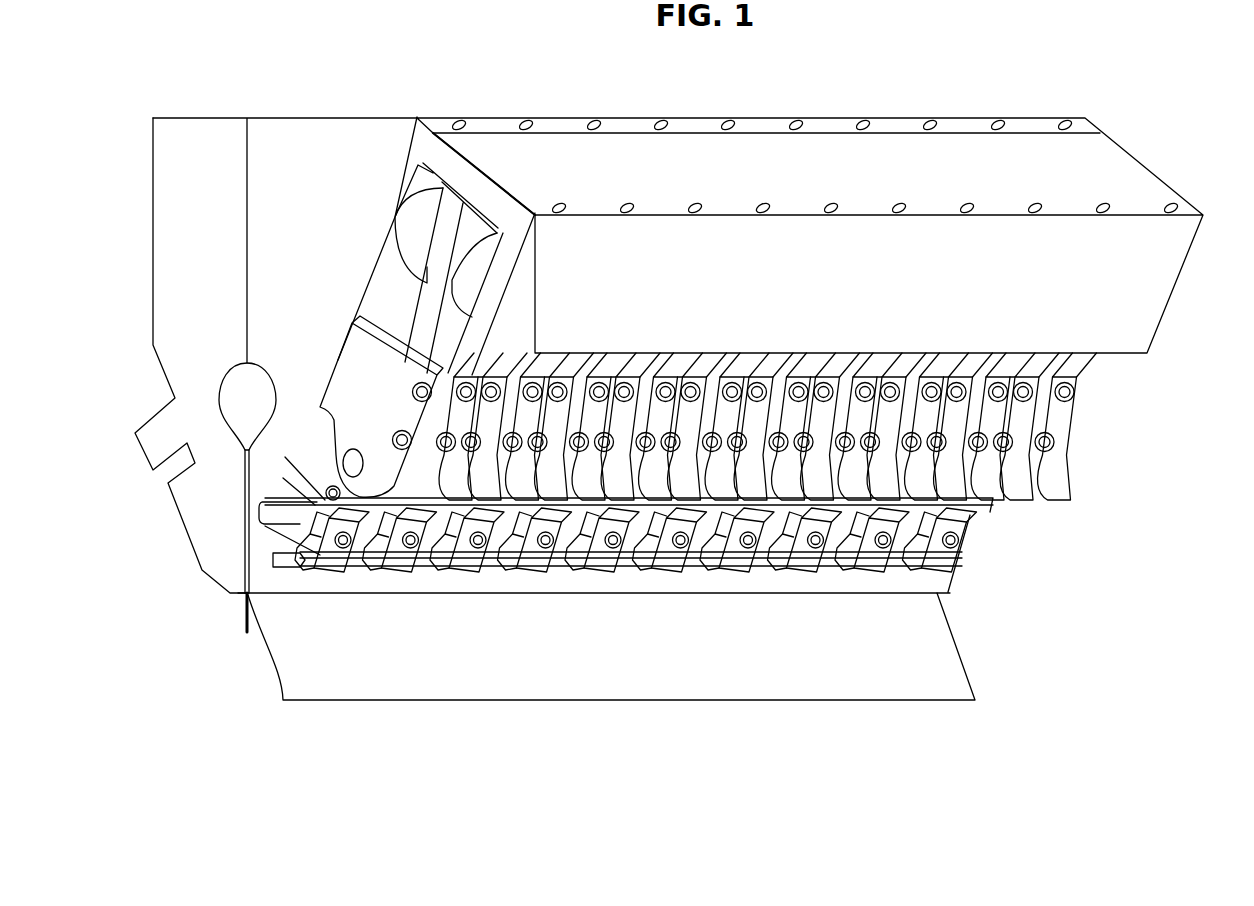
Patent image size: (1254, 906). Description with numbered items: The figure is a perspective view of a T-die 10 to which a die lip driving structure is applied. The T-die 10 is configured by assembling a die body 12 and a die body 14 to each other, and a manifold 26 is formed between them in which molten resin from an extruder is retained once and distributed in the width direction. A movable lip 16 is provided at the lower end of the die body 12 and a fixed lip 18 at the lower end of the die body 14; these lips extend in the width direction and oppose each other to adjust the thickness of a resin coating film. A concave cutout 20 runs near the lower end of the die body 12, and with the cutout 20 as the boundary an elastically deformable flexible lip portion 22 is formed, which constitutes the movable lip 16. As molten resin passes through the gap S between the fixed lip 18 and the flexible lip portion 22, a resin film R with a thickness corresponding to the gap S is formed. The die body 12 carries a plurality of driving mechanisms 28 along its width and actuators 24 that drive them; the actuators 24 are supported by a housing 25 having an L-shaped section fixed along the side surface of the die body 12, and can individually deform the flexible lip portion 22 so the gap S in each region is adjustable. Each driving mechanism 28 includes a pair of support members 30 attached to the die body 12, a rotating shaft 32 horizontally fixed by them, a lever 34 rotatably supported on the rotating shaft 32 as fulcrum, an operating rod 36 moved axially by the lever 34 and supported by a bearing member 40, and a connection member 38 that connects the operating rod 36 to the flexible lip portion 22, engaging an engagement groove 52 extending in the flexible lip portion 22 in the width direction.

The T-die 10 is at (1114, 94).
The die body 12 is at (318, 117).
The die body 14 is at (197, 117).
The movable lip 16 is at (263, 597).
The fixed lip 18 is at (240, 598).
The concave cutout 20 is at (263, 525).
The flexible lip portion 22 is at (601, 632).
The actuator 24 is at (439, 190).
The housing 25 is at (630, 148).
The manifold 26 is at (229, 412).
The driving mechanism 28 is at (441, 428).
The support member 30 is at (388, 505).
The rotating shaft 32 is at (350, 540).
The lever 34 is at (420, 570).
The operating rod 36 is at (304, 540).
The connection member 38 is at (332, 570).
The bearing member 40 is at (370, 572).
The engagement groove 52 is at (263, 567).
The gap S is at (246, 629).
The resin film R is at (966, 682).